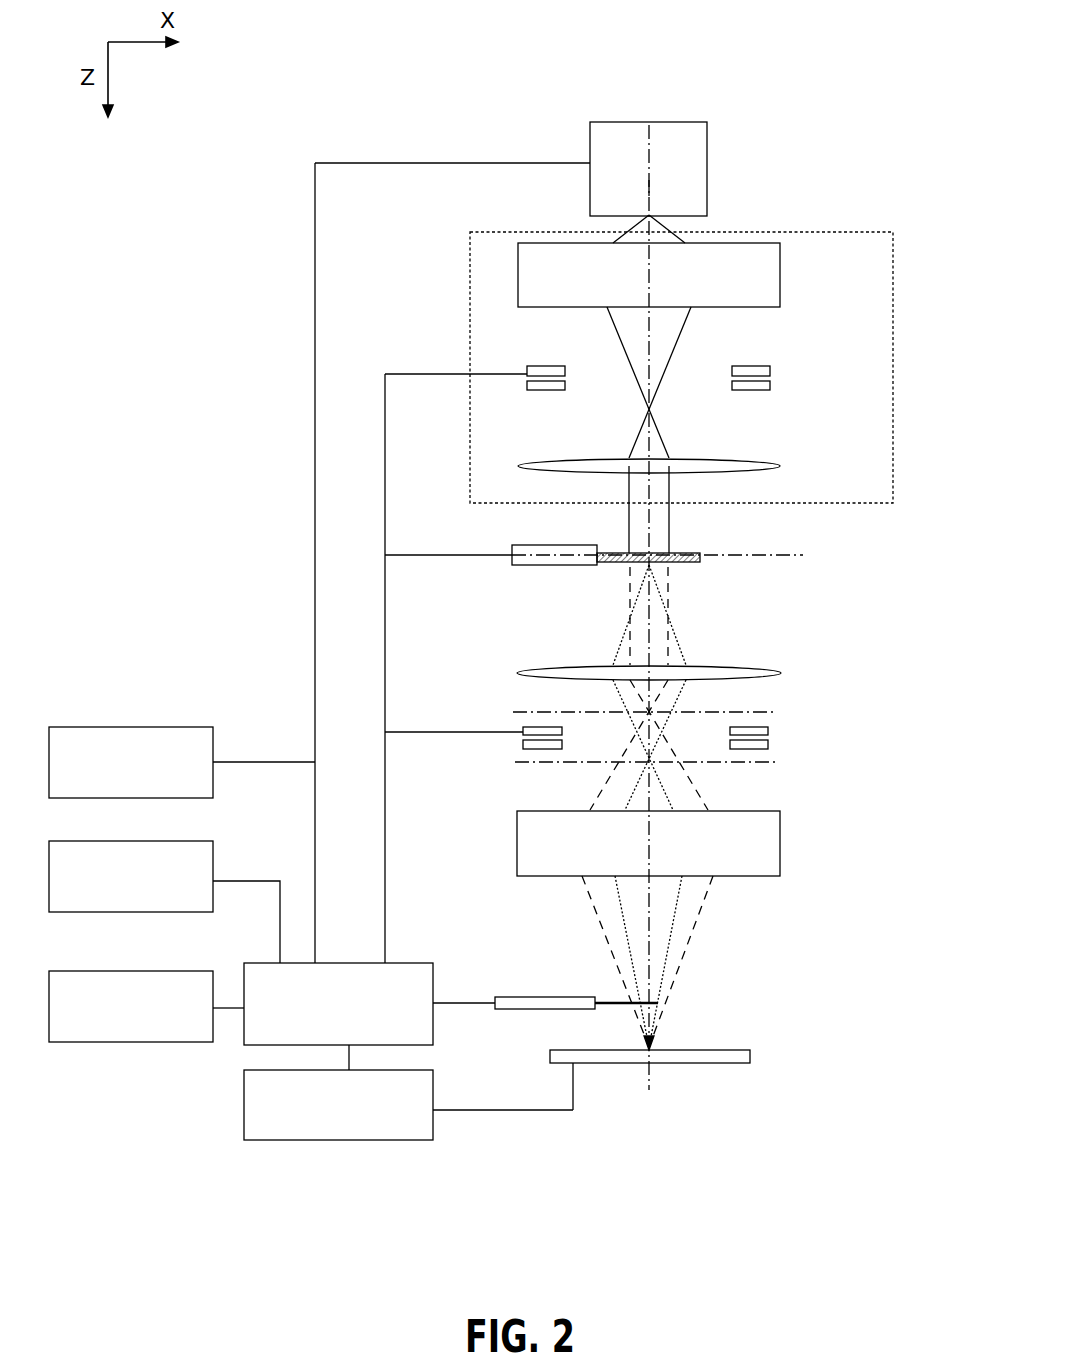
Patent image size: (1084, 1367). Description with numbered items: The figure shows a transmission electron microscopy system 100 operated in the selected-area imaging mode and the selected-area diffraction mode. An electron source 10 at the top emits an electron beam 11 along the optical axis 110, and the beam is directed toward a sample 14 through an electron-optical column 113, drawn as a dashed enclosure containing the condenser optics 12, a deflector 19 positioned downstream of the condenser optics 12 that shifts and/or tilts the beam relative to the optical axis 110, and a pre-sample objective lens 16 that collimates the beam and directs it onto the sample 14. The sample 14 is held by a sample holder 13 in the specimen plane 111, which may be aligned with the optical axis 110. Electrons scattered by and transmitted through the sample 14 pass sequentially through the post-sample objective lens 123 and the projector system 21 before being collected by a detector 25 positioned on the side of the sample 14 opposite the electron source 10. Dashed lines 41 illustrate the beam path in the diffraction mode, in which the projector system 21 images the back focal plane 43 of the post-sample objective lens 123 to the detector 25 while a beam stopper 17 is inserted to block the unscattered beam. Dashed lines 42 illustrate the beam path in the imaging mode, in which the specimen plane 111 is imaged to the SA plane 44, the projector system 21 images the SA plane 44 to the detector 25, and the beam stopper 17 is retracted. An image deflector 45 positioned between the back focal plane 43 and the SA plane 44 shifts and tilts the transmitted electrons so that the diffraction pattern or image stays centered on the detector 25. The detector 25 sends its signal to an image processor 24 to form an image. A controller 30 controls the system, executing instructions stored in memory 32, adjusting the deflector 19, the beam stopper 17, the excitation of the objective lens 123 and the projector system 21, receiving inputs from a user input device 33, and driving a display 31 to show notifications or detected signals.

The transmission electron microscopy (TEM) system 100 is at (856, 64).
The electron source 10 is at (707, 122).
The optical axis 110 is at (649, 192).
The electron beam 11 is at (662, 241).
The condenser optics 12 is at (780, 272).
The electron-optical column 113 is at (893, 337).
The deflector 19 is at (770, 367).
The pre-sample objective lens 16 is at (541, 461).
The sample holder 13 is at (548, 545).
The sample 14 is at (700, 553).
The specimen plane 111 is at (790, 553).
The dashed lines 41 is at (668, 590).
The dashed lines 42 is at (678, 637).
The post-sample objective lens 123 is at (743, 667).
The back focal plane 43 is at (715, 712).
The image deflector 45 is at (768, 727).
The SA plane 44 is at (770, 761).
The projector system 21 is at (780, 832).
The beam stopper 17 is at (623, 1000).
The detector 25 is at (748, 1048).
The non-transitory memory 32 is at (181, 727).
The display 31 is at (183, 841).
The user input device 33 is at (183, 971).
The controller 30 is at (405, 963).
The image processor 24 is at (275, 1142).